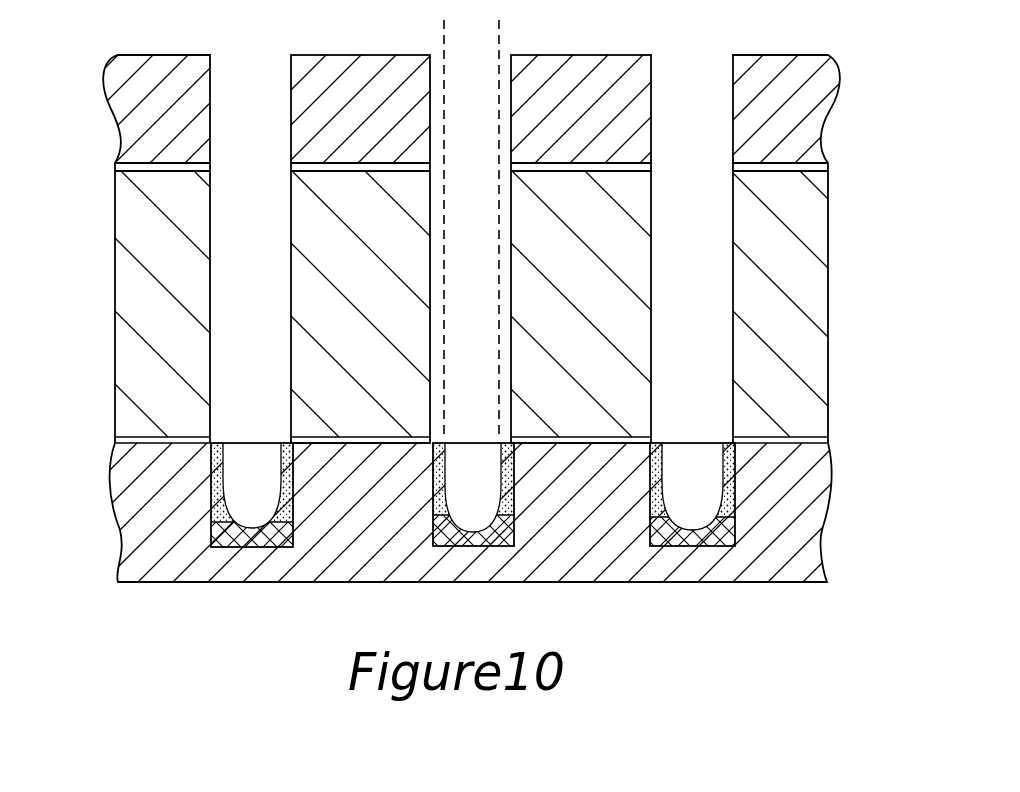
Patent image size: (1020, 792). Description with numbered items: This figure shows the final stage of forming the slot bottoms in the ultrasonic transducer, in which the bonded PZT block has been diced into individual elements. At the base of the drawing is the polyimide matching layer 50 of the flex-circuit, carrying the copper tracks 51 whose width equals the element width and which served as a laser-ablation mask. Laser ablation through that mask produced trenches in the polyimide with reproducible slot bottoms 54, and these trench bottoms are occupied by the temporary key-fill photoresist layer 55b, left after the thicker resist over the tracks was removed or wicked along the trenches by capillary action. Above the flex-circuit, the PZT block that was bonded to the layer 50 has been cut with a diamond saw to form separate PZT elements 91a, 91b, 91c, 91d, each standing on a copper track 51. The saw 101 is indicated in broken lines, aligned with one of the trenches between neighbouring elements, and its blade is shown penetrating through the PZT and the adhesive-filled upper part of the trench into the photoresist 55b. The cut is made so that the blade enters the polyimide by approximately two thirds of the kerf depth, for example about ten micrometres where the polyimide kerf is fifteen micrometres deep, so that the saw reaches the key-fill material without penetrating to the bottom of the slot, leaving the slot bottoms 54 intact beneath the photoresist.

The polyimide matching layer 50 is at (787, 545).
The copper tracks 51 is at (117, 440).
The slot bottoms 54 is at (266, 540).
The photoresist layer 55b is at (238, 535).
The PZT element 91a is at (162, 260).
The PZT element 91b is at (338, 259).
The PZT element 91c is at (600, 292).
The PZT element 91d is at (780, 296).
The saw 101 is at (499, 44).